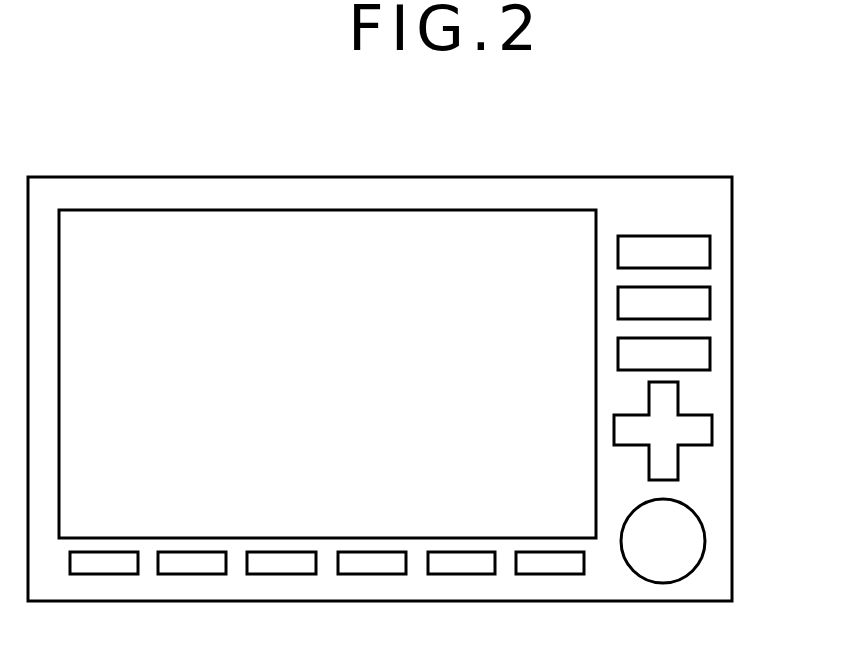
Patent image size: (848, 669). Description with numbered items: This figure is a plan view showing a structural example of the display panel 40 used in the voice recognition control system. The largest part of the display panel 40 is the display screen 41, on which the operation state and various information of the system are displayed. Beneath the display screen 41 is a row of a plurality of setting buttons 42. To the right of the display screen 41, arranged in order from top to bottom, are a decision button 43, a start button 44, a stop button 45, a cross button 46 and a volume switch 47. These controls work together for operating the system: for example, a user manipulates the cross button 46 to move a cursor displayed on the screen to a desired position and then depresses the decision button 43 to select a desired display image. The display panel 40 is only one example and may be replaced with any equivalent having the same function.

The display panel 40 is at (187, 166).
The display screen 41 is at (421, 210).
The setting buttons 42 is at (290, 578).
The decision button 43 is at (693, 254).
The start button 44 is at (690, 306).
The stop button 45 is at (695, 356).
The cross button 46 is at (695, 432).
The volume switch 47 is at (690, 542).